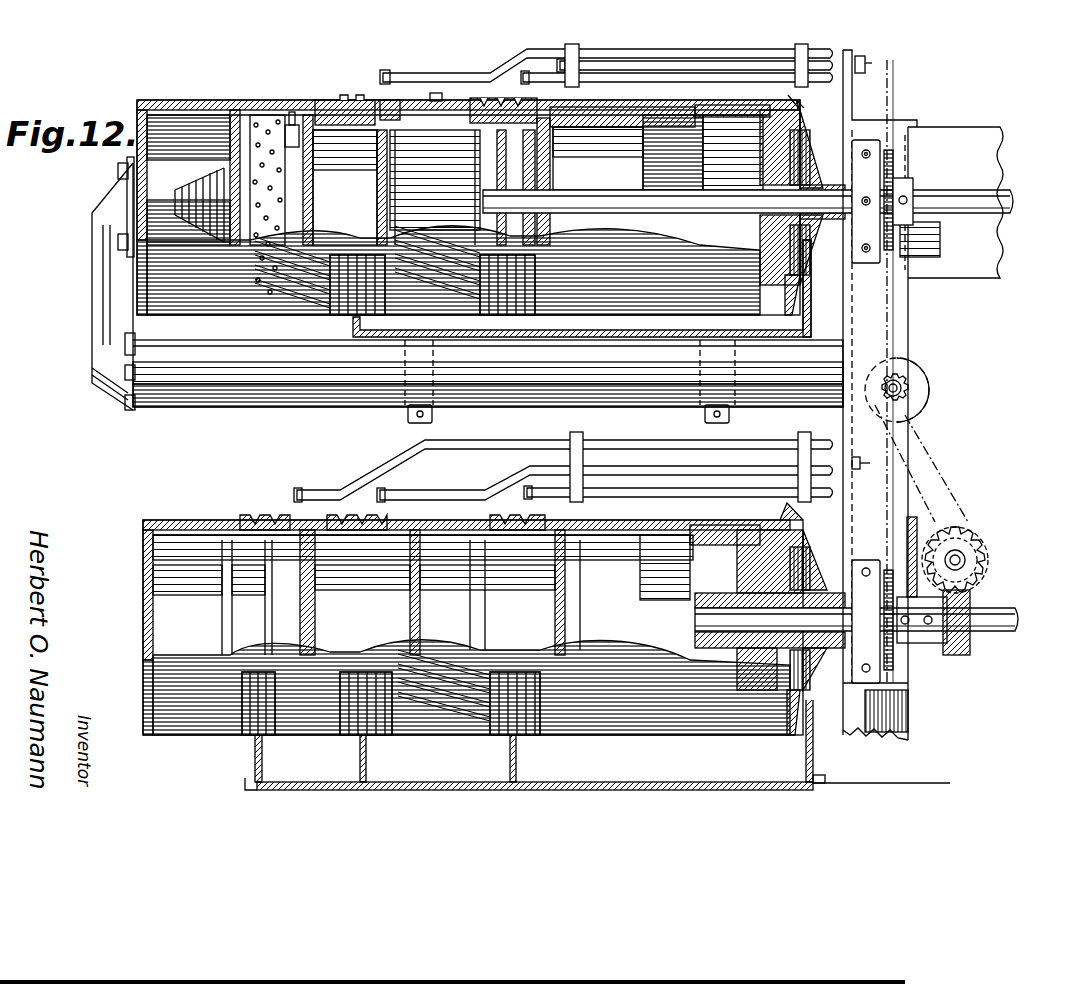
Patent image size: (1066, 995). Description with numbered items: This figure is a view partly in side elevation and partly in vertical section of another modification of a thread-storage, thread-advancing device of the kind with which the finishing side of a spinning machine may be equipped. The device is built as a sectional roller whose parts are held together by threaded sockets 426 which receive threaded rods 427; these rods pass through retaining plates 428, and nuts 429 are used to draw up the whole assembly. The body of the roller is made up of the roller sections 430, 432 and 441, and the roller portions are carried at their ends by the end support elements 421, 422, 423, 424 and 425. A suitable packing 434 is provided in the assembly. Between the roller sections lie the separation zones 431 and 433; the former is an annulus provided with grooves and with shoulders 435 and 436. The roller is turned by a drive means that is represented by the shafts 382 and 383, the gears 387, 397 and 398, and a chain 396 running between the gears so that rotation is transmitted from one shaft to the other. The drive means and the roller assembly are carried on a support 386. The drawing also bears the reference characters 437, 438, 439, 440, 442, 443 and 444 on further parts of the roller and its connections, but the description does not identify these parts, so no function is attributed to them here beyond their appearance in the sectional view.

The shaft 382 is at (1010, 192).
The shaft 383 is at (1008, 607).
The support 386 is at (913, 727).
The gear 387 is at (962, 655).
The chain 396 is at (943, 460).
The gear 397 is at (905, 385).
The gear 398 is at (930, 393).
The end support element 421 is at (819, 198).
The end support element 422 is at (808, 246).
The end support element 423 is at (796, 120).
The end support element 424 is at (796, 102).
The end support element 425 is at (690, 171).
The threaded socket 426 is at (737, 148).
The threaded rod 427 is at (607, 133).
The retaining plate 428 is at (320, 140).
The nut 429 is at (282, 110).
The roller section 430 is at (660, 100).
The separation zone 431 is at (548, 108).
The roller section 432 is at (428, 102).
The separation zone 433 is at (363, 100).
The packing 434 is at (762, 101).
The shoulder 435 is at (568, 100).
The shoulder 436 is at (476, 104).
The partition 437 is at (495, 162).
The shaft 438 is at (489, 192).
The pipe 439 is at (400, 84).
The plate 440 is at (310, 106).
The roller section 441 is at (222, 100).
The bellows 442 is at (205, 228).
The screw 443 is at (268, 100).
The toothed ring 444 is at (283, 517).